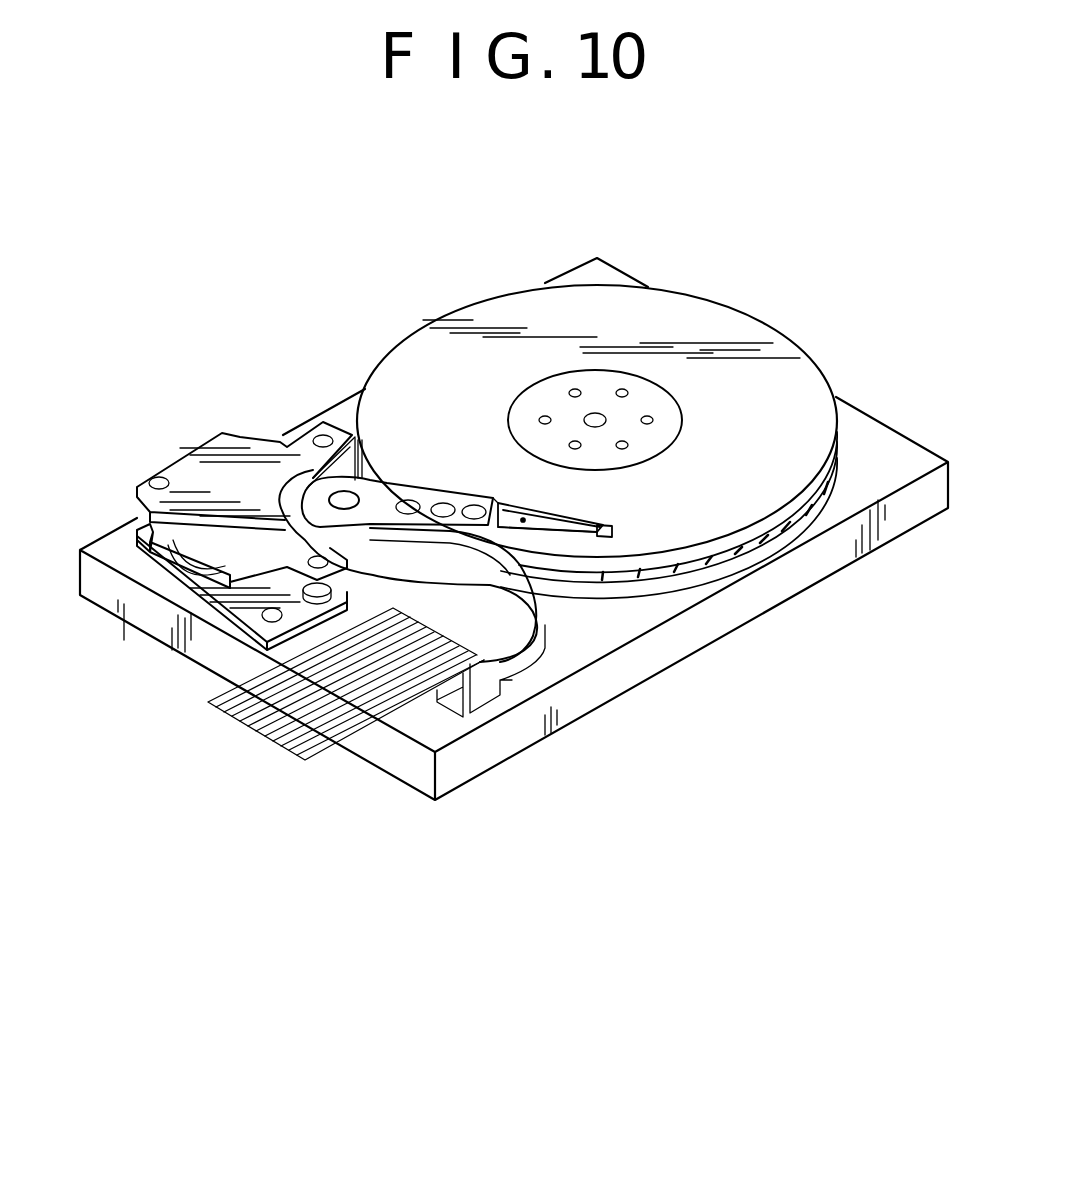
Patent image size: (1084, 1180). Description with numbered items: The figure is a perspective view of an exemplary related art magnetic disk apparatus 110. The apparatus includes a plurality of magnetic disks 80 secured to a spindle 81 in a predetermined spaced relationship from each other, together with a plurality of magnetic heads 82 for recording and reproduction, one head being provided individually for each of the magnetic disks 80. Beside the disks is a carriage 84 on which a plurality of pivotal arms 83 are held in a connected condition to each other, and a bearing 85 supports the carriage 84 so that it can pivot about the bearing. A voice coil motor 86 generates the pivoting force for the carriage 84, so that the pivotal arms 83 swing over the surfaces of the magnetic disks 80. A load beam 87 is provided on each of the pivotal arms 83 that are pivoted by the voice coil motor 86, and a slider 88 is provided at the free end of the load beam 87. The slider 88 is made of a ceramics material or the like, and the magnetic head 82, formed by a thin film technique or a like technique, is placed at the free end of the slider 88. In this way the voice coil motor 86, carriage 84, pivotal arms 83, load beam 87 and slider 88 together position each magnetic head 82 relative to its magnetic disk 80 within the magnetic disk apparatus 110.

The magnetic disk 80 is at (793, 397).
The spindle 81 is at (597, 405).
The magnetic head 82 is at (613, 528).
The pivotal arm 83 is at (383, 497).
The carriage 84 is at (317, 503).
The bearing 85 is at (345, 497).
The voice coil motor 86 is at (122, 472).
The load beam 87 is at (603, 535).
The slider 88 is at (540, 522).
The magnetic disk apparatus 110 is at (483, 828).